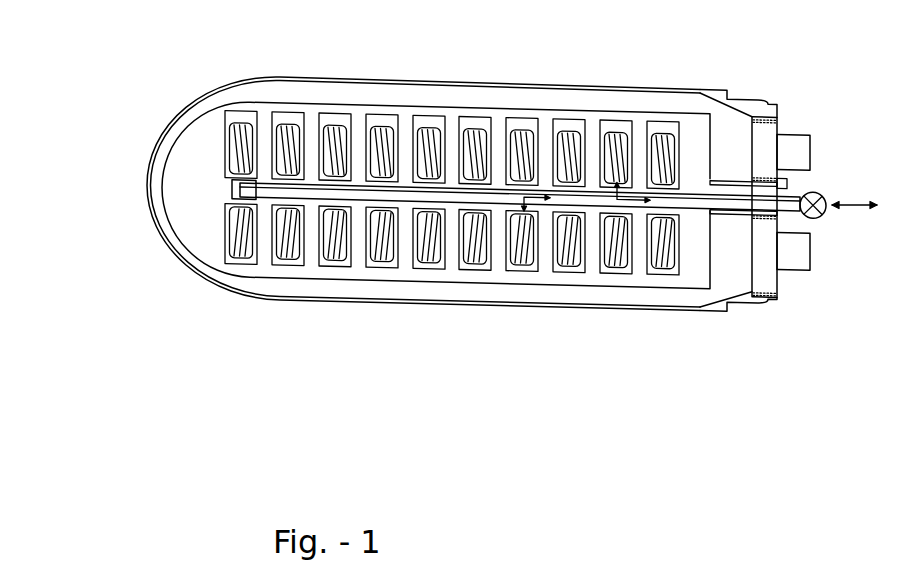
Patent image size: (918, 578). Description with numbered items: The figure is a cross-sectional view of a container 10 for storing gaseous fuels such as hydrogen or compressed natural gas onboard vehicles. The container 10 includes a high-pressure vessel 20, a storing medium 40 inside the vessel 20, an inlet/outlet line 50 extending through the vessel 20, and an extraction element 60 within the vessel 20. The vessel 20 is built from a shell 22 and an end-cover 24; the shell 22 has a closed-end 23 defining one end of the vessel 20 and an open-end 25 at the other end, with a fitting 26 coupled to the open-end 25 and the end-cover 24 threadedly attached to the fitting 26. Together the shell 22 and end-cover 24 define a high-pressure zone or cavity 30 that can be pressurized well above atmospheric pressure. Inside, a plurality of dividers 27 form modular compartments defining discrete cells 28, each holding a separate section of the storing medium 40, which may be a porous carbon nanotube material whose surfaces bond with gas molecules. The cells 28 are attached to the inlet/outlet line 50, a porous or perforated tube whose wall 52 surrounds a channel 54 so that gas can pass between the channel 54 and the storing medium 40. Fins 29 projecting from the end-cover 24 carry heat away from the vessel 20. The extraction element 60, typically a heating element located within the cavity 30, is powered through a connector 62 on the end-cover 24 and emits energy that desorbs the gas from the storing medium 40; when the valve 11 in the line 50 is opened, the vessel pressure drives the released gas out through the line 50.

The container 10 is at (97, 65).
The valve 11 is at (813, 205).
The high-pressure vessel 20 is at (423, 192).
The shell 22 is at (423, 192).
The closed-end 23 is at (425, 192).
The end-cover 24 is at (764, 207).
The open-end 25 is at (726, 300).
The fitting 26 is at (738, 304).
The dividers 27 is at (452, 239).
The cells 28 is at (358, 237).
The fins 29 is at (793, 202).
The high-pressure zone or cavity 30 is at (738, 104).
The storing medium 40 is at (545, 242).
The inlet/outlet line 50 is at (516, 192).
The wall 52 is at (520, 194).
The channel 54 is at (244, 190).
The extraction element 60 is at (436, 194).
The connector 62 is at (782, 183).